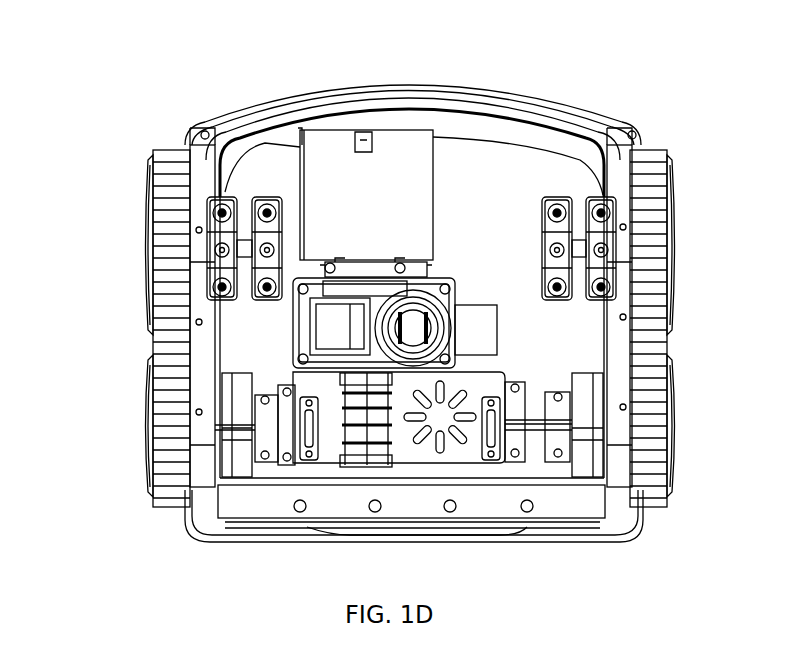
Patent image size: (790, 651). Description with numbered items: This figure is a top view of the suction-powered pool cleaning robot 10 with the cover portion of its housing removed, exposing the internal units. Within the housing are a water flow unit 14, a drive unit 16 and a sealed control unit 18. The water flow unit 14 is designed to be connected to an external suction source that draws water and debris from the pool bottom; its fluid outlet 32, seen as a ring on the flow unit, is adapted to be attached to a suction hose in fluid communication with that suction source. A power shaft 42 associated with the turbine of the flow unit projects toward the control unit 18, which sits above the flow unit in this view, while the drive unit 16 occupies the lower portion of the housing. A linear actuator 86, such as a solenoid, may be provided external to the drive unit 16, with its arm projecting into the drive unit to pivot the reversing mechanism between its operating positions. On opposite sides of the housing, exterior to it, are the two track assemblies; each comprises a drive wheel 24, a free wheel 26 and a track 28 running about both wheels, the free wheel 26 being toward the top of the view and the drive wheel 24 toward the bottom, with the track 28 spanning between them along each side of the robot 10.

The suction-powered pool cleaning robot 10 is at (658, 86).
The water flow unit 14 is at (293, 327).
The drive unit 16 is at (480, 378).
The sealed control unit 18 is at (425, 198).
The drive wheel 24 is at (147, 438).
The free wheel 26 is at (143, 253).
The track 28 is at (177, 337).
The fluid outlet 32 is at (440, 283).
The power shaft 42 is at (397, 260).
The linear actuator 86 is at (482, 325).